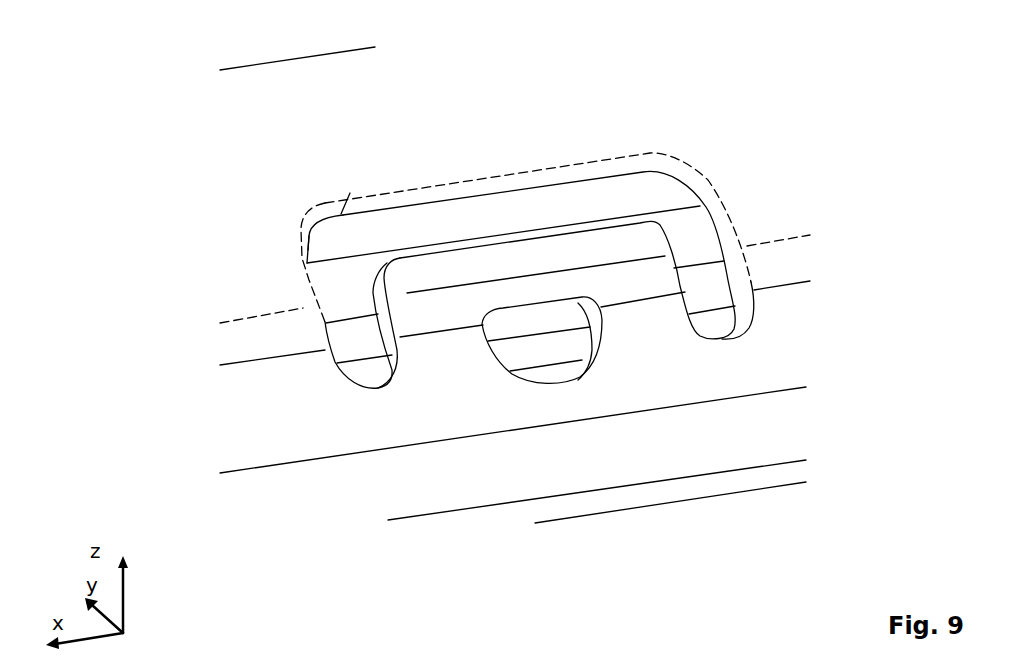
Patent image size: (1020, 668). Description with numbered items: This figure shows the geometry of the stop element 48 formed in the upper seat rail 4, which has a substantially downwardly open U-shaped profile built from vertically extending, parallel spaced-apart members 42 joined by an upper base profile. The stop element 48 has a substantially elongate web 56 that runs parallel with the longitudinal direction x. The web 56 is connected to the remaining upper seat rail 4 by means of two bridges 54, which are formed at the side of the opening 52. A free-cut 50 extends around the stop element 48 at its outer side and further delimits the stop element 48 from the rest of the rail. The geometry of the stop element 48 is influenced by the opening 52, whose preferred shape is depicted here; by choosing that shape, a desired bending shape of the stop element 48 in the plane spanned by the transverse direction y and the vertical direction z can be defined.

The upper seat rail 4 is at (789, 147).
The member 42 is at (748, 227).
The stop element 48 is at (482, 265).
The free-cut 50 is at (343, 258).
The opening 52 is at (556, 356).
The bridge 54 is at (447, 340).
The web 56 is at (537, 263).